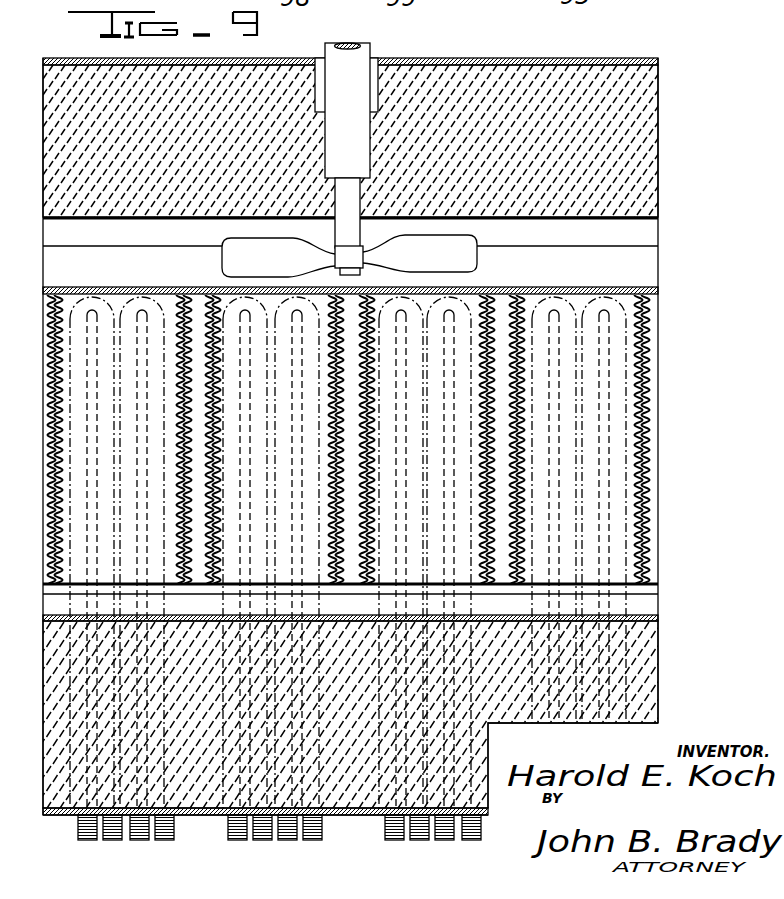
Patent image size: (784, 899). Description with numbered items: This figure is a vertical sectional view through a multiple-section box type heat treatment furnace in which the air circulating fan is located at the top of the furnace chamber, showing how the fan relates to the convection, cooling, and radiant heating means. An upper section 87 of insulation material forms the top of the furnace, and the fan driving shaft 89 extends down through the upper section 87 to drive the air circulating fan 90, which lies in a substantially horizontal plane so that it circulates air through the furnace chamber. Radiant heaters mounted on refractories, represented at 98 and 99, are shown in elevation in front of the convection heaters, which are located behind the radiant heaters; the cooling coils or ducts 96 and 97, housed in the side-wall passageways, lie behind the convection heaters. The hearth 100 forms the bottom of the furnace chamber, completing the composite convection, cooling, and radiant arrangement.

The upper section of insulation material 87 is at (647, 133).
The fan driving shaft 89 is at (347, 70).
The air circulating fan 90 is at (467, 254).
The cooling coils or ducts 96 is at (650, 666).
The cooling coils or ducts 97 is at (597, 373).
The radiant heaters mounted on refractories 98 is at (503, 448).
The radiant heaters mounted on refractories 99 is at (206, 296).
The hearth 100 is at (625, 612).